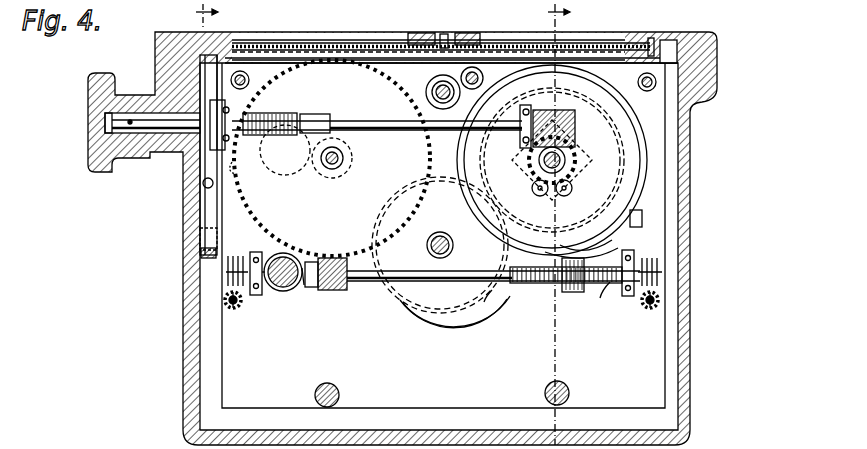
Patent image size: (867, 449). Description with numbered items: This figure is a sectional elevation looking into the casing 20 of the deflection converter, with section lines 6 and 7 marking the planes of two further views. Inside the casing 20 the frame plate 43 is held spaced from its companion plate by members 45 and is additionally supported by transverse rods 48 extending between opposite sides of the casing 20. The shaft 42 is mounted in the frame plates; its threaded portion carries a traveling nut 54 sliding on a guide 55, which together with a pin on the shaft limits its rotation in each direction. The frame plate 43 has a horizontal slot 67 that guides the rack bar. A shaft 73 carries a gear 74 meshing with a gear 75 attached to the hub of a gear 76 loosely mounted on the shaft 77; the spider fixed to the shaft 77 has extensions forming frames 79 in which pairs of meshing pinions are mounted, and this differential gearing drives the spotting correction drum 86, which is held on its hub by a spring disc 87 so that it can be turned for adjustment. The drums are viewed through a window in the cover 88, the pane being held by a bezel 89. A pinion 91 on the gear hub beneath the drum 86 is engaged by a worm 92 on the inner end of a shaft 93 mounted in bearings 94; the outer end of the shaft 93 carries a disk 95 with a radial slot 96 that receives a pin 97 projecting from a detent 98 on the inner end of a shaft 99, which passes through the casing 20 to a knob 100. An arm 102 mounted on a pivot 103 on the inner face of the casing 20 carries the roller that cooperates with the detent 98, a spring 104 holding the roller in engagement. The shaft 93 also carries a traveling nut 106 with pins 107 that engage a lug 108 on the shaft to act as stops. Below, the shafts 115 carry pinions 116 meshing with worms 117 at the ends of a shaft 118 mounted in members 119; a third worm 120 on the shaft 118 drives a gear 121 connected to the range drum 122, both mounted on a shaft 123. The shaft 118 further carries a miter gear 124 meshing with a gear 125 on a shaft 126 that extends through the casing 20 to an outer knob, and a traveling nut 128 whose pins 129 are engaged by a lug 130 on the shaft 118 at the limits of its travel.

The section line 6- 6 is at (198, 17).
The section line 7- 7 is at (550, 224).
The casing 20 is at (690, 240).
The shaft 42 is at (436, 88).
The frame plate 43 is at (402, 408).
The spacing members 45 is at (258, 74).
The transverse rods 48 is at (327, 407).
The traveling nut 54 is at (445, 40).
The guide 55 is at (472, 68).
The horizontal slot 67 is at (640, 212).
The shaft 73 is at (454, 245).
The gear 74 is at (462, 312).
The gear 75 is at (645, 180).
The gear 76 is at (578, 165).
The shaft 77 is at (568, 158).
The frames 79 is at (576, 174).
The spotting correction drum 86 is at (640, 125).
The spring disc 87 is at (625, 145).
The cover 88 is at (640, 42).
The bezel 89 is at (612, 60).
The pinion 91 is at (534, 183).
The worm 92 is at (572, 116).
The shaft 93 is at (401, 130).
The bearings 94 is at (228, 118).
The disk 95 is at (218, 60).
The radial slot 96 is at (228, 106).
The pin 97 is at (240, 160).
The detent 98 is at (200, 155).
The shaft 99 is at (160, 140).
The knob 100 is at (92, 172).
The arm 102 is at (205, 200).
The pivot 103 is at (212, 262).
The spring 104 is at (214, 185).
The traveling nut 106 is at (262, 113).
The pins 107 is at (285, 150).
The lug 108 is at (320, 115).
The shaft 115 is at (226, 302).
The pinions 116 is at (236, 311).
The worms 117 is at (226, 272).
The shaft 118 is at (400, 284).
The members 119 is at (256, 296).
The worm 120 is at (336, 292).
The gear 121 is at (440, 245).
The range drum 122 is at (338, 62).
The shaft 123 is at (330, 170).
The miter gear 124 is at (300, 282).
The gear 125 is at (283, 292).
The shaft 126 is at (292, 292).
The traveling nut 128 is at (574, 293).
The pins 129 is at (600, 252).
The lug 130 is at (484, 302).